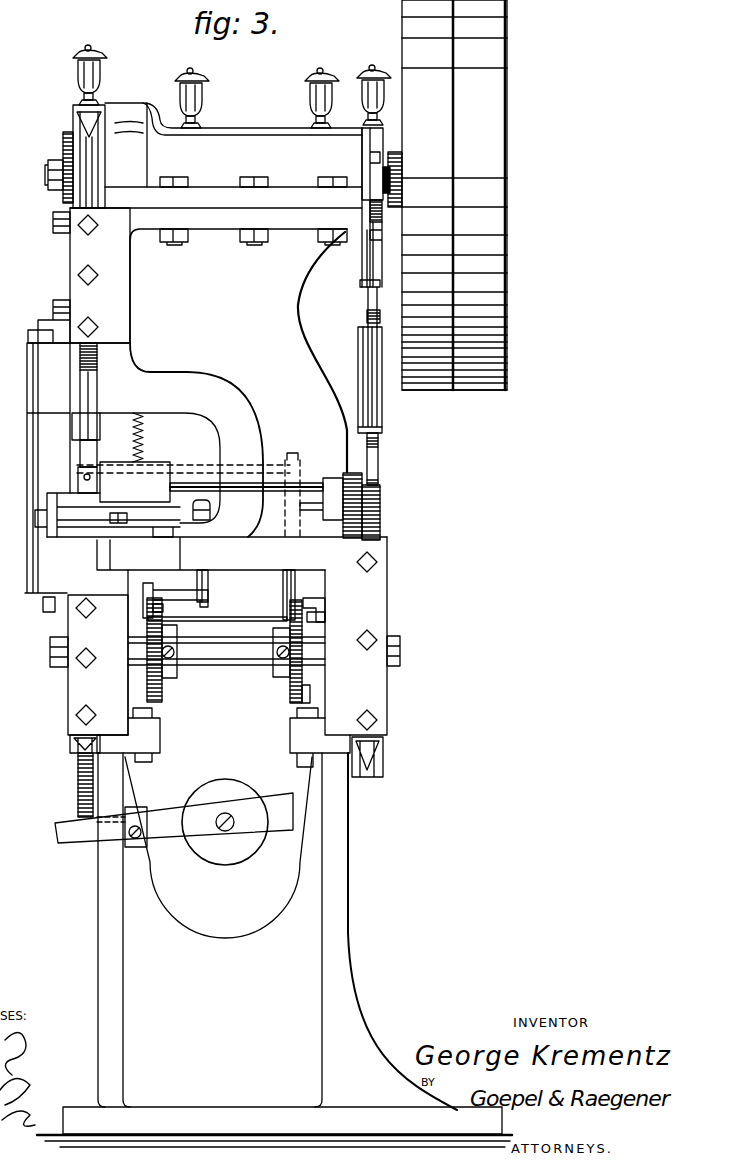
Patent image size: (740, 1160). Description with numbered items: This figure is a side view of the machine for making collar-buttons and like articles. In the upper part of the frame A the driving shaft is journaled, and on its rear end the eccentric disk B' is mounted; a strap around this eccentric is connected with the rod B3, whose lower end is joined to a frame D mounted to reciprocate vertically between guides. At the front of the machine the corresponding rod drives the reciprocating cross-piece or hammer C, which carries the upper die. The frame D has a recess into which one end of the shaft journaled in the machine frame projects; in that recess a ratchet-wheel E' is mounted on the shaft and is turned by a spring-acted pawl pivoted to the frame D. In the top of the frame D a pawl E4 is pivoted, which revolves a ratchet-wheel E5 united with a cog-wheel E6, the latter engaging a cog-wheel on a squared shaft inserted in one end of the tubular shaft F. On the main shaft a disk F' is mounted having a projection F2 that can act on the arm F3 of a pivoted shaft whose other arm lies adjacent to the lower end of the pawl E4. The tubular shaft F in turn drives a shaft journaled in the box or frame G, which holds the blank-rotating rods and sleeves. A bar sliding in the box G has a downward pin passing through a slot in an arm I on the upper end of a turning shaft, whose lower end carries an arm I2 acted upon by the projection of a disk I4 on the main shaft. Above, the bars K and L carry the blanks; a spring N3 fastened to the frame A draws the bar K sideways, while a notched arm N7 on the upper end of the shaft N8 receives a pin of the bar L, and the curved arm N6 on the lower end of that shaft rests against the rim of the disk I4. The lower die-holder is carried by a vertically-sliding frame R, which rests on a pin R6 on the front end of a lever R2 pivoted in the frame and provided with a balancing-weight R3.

The frame A is at (223, 383).
The disk B' is at (382, 207).
The rod B3 is at (368, 320).
The reciprocating cross-piece or hammer C is at (208, 583).
The frame D is at (384, 751).
The ratchet-wheel E' is at (364, 406).
The pawl E4 is at (322, 602).
The ratchet-wheel E5 is at (381, 493).
The cog-wheel E6 is at (352, 527).
The tubular shaft F is at (226, 560).
The disk F' is at (282, 651).
The projection F2 is at (310, 694).
The arm F3 is at (309, 619).
The box or frame G is at (135, 482).
The arm I is at (195, 509).
The lever arm I' is at (147, 609).
The arm I2 is at (175, 599).
The disk I4 is at (162, 694).
The bar K is at (83, 477).
The bar L is at (95, 452).
The spring N3 is at (96, 397).
The curved arm N6 is at (217, 610).
The arm N7 is at (183, 461).
The shaft N8 is at (287, 585).
The vertically-sliding frame R is at (72, 742).
The lever R2 is at (78, 812).
The balancing-weight R3 is at (225, 822).
The pin R6 is at (80, 773).